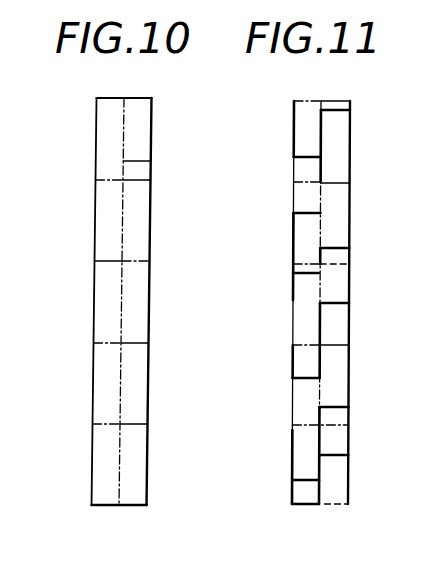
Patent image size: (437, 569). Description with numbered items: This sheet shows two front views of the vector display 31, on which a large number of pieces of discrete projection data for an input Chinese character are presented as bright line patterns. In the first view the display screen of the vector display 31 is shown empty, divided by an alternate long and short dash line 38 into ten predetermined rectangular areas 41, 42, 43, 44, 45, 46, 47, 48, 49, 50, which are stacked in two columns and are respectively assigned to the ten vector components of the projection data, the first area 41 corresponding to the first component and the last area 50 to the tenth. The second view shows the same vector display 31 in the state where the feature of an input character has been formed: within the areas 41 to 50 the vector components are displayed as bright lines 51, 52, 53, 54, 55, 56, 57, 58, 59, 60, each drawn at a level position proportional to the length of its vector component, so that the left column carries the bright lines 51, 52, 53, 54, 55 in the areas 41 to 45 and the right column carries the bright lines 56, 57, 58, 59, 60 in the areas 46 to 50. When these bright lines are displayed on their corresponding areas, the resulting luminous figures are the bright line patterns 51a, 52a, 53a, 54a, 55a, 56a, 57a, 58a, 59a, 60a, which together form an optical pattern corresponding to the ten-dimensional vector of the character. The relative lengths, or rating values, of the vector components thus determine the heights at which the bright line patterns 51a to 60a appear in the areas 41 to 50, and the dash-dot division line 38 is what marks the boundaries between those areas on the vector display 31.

In FIG. 10, the vector display 31 is at (104, 92).
In FIG. 11, the vector display 31 is at (300, 94).
In FIG. 10, the alternate long and short dash line 38 is at (130, 178).
In FIG. 11, the alternate long and short dash line 38 is at (338, 185).
In FIG. 10, the rectangular area 41 is at (100, 143).
In FIG. 11, the rectangular area 41 is at (300, 128).
In FIG. 10, the rectangular area 42 is at (99, 211).
In FIG. 11, the rectangular area 42 is at (297, 190).
In FIG. 10, the rectangular area 43 is at (98, 300).
In FIG. 11, the rectangular area 43 is at (297, 325).
In FIG. 10, the rectangular area 44 is at (98, 391).
In FIG. 11, the rectangular area 44 is at (297, 405).
In FIG. 10, the rectangular area 45 is at (98, 457).
In FIG. 11, the rectangular area 45 is at (297, 459).
In FIG. 10, the rectangular area 46 is at (137, 127).
In FIG. 11, the rectangular area 46 is at (340, 157).
In FIG. 10, the rectangular area 47 is at (142, 231).
In FIG. 11, the rectangular area 47 is at (340, 233).
In FIG. 10, the rectangular area 48 is at (137, 311).
In FIG. 11, the rectangular area 48 is at (346, 303).
In FIG. 10, the rectangular area 49 is at (135, 391).
In FIG. 11, the rectangular area 49 is at (340, 350).
In FIG. 10, the rectangular area 50 is at (135, 468).
In FIG. 11, the rectangular area 50 is at (327, 488).
In FIG. 11, the bright line 51 is at (300, 156).
In FIG. 11, the bright line pattern 51a is at (301, 141).
In FIG. 11, the bright line 52 is at (297, 236).
In FIG. 11, the bright line pattern 52a is at (297, 263).
In FIG. 11, the bright line 53 is at (297, 293).
In FIG. 11, the bright line pattern 53a is at (297, 318).
In FIG. 11, the bright line 54 is at (297, 380).
In FIG. 11, the bright line pattern 54a is at (297, 352).
In FIG. 11, the bright line 55 is at (297, 488).
In FIG. 11, the bright line pattern 55a is at (300, 483).
In FIG. 11, the bright line 56 is at (343, 113).
In FIG. 11, the bright line pattern 56a is at (352, 131).
In FIG. 11, the bright line 57 is at (346, 250).
In FIG. 11, the bright line pattern 57a is at (345, 207).
In FIG. 11, the bright line 58 is at (346, 308).
In FIG. 11, the bright line pattern 58a is at (337, 322).
In FIG. 11, the bright line 59 is at (346, 407).
In FIG. 11, the bright line pattern 59a is at (345, 375).
In FIG. 11, the bright line 60 is at (346, 455).
In FIG. 11, the bright line pattern 60a is at (336, 470).